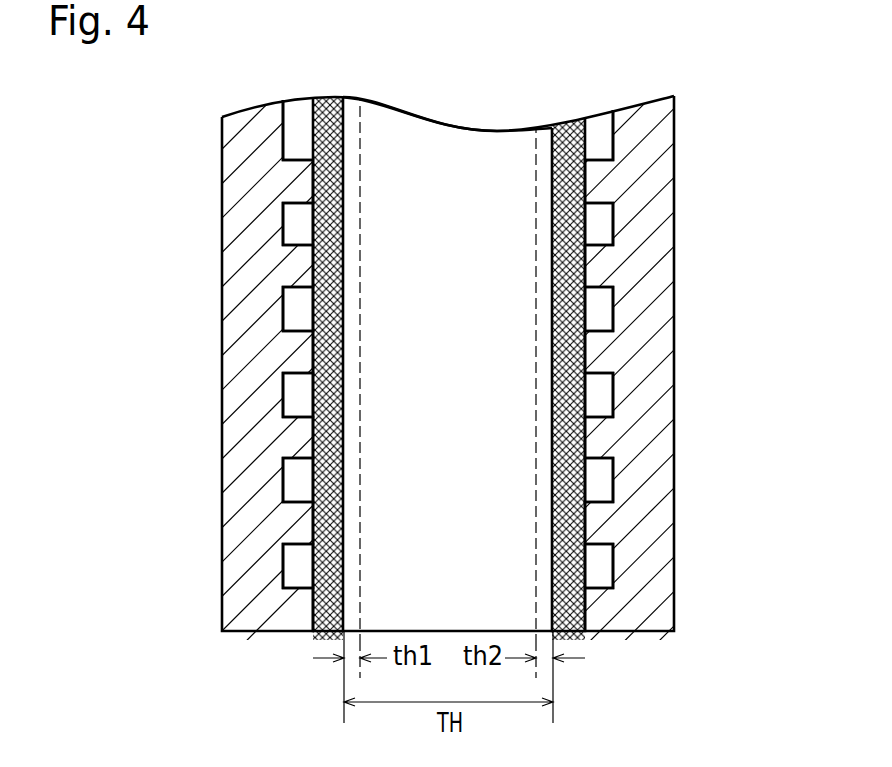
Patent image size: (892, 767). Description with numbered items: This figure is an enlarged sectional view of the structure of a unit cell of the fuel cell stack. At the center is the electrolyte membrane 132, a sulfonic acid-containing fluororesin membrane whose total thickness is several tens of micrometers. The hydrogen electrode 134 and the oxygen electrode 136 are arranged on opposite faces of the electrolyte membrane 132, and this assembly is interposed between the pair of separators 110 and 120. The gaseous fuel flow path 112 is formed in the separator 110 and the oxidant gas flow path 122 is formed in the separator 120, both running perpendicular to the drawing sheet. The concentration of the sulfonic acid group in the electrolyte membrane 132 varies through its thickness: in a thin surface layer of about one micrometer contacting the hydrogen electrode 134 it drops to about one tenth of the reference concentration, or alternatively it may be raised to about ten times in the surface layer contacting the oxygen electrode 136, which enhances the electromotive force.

The separator 110 is at (222, 372).
The gaseous fuel flow path 112 is at (297, 230).
The separator 120 is at (674, 372).
The oxidant gas flow path 122 is at (600, 226).
The electrolyte membrane 132 is at (435, 142).
The hydrogen electrode 134 is at (314, 631).
The oxygen electrode 136 is at (570, 632).